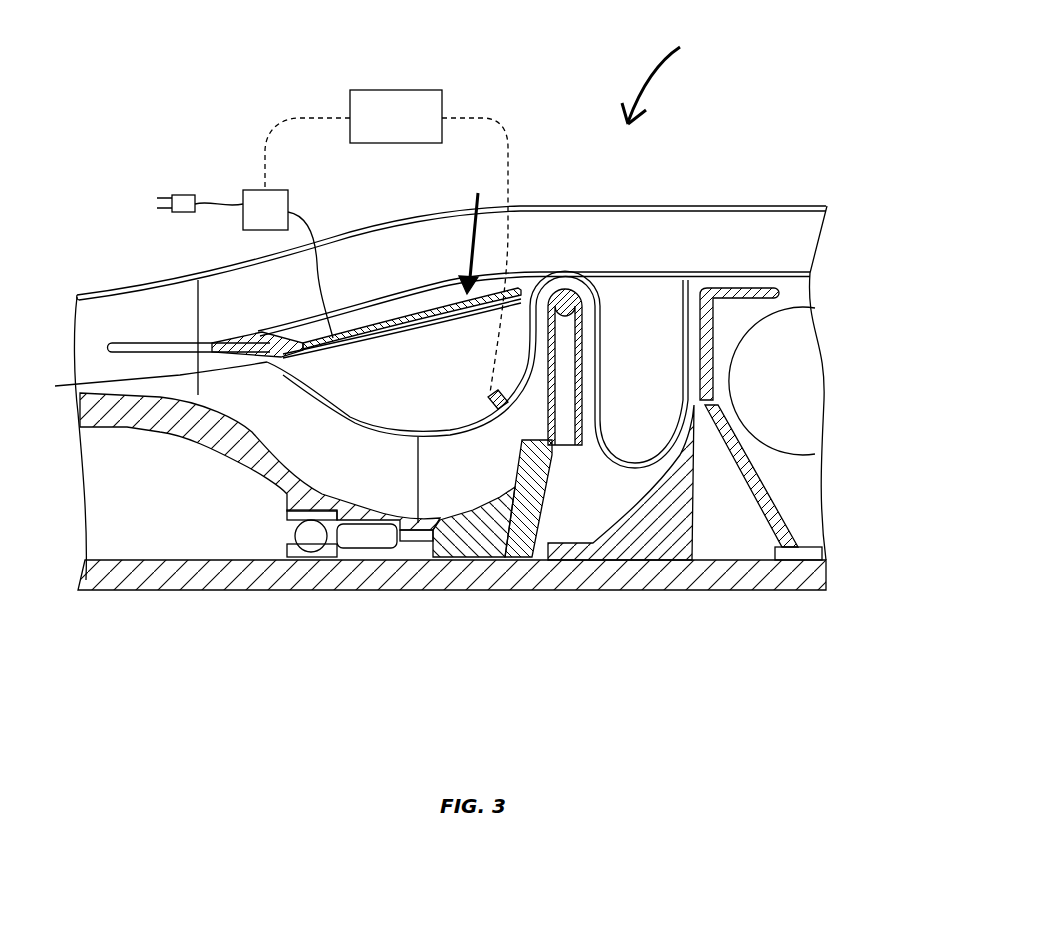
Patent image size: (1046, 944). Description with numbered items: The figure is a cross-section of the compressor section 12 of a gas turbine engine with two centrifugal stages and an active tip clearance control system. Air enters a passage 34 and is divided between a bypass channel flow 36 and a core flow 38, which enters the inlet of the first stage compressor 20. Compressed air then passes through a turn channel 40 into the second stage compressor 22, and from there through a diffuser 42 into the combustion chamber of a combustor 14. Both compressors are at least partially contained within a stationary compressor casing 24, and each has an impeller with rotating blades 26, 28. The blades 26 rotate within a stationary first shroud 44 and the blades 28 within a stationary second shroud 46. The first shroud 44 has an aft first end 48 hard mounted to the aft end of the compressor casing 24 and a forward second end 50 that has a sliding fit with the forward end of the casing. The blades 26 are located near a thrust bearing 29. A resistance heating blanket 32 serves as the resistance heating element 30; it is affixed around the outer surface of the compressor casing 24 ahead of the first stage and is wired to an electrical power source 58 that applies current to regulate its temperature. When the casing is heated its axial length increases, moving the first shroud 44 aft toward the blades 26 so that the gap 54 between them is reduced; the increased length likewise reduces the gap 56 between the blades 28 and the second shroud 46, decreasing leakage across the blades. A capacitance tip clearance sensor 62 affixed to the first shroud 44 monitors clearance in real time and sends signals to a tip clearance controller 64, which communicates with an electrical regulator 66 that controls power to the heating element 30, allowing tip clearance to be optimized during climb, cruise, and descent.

The compressor section 12 is at (667, 78).
The combustor 14 is at (793, 360).
The first stage compressor 20 is at (493, 533).
The second stage compressor 22 is at (653, 527).
The compressor casing 24 is at (333, 340).
The blades 26 is at (528, 437).
The blades 28 is at (690, 437).
The thrust bearing 29 is at (308, 540).
The resistance heating element 30 is at (475, 230).
The resistance heating blanket 32 is at (432, 312).
The passage 34 is at (92, 340).
The bypass channel flow 36 is at (382, 260).
The core flow 38 is at (277, 413).
The turn channel 40 is at (564, 287).
The diffuser 42 is at (742, 287).
The first shroud 44 is at (520, 378).
The second shroud 46 is at (667, 450).
The first end 48 is at (535, 275).
The second end 50 is at (147, 381).
The gap 54 is at (500, 423).
The gap 56 is at (657, 460).
The electrical power source 58 is at (185, 203).
The capacitance tip clearance sensor 62 is at (490, 398).
The tip clearance controller 64 is at (410, 98).
The electrical regulator 66 is at (260, 203).